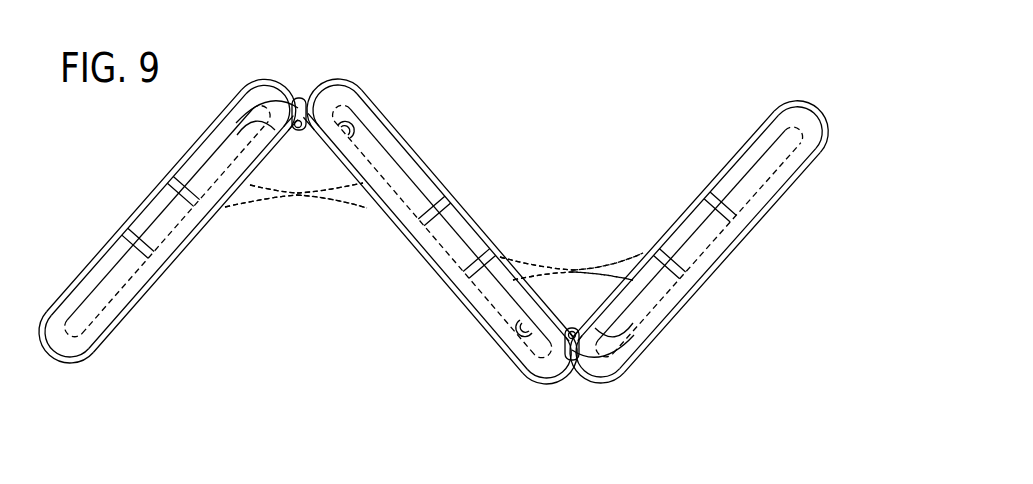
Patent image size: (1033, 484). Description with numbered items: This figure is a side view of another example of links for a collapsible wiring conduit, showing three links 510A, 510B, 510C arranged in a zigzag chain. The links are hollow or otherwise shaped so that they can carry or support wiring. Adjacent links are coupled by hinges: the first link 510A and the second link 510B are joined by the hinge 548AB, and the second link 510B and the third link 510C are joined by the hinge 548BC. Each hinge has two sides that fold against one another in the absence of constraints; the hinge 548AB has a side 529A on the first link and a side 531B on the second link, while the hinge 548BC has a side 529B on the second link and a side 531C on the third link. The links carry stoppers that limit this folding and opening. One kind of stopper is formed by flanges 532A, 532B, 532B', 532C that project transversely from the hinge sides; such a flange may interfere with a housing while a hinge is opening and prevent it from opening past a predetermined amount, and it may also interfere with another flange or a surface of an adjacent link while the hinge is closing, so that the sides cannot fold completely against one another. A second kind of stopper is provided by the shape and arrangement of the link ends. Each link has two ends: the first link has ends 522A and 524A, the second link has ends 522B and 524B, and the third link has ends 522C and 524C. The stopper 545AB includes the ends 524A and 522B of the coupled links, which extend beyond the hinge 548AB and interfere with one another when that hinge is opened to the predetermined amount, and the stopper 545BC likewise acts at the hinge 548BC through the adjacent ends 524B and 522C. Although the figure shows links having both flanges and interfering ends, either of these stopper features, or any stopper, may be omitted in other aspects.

The link 510A is at (143, 200).
The link 510B is at (448, 196).
The link 510C is at (733, 250).
The end 522A is at (67, 363).
The end 524A is at (262, 80).
The end 522B is at (332, 82).
The end 524B is at (545, 384).
The end 522C is at (608, 382).
The end 524C is at (797, 101).
The flange 532A is at (211, 158).
The flange 532B is at (463, 213).
The flange 532B' is at (420, 249).
The flange 532C is at (668, 319).
The side 529A is at (280, 150).
The side 531B is at (313, 150).
The side 529B is at (548, 292).
The side 531C is at (595, 293).
The hinge 548AB is at (300, 98).
The hinge 548BC is at (573, 360).
The stopper 545AB is at (238, 243).
The stopper 545BC is at (617, 203).